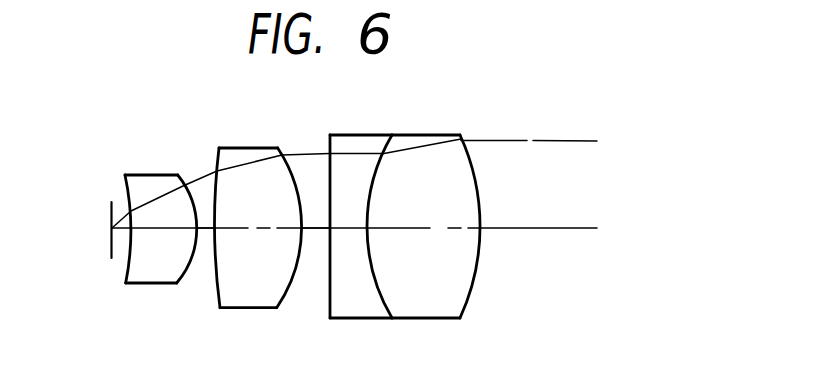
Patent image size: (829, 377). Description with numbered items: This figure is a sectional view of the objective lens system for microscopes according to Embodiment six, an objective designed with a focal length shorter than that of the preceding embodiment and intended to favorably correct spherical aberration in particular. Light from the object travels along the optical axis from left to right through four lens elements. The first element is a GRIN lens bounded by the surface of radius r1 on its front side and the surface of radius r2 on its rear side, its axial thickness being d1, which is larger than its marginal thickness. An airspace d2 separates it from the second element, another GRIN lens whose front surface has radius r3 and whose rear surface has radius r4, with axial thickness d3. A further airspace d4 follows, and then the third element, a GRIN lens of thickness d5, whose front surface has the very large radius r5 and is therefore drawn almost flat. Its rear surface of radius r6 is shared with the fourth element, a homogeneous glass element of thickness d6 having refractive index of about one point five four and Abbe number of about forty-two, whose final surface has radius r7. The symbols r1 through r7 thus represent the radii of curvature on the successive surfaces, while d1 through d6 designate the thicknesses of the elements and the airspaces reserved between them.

The radius of curvature of the first surface r1 is at (126, 185).
The radius of curvature of the second surface r2 is at (190, 183).
The radius of curvature of the third surface r3 is at (218, 162).
The radius of curvature of the fourth surface r4 is at (287, 160).
The radius of curvature of the fifth surface r5 is at (330, 148).
The radius of curvature of the sixth surface r6 is at (381, 158).
The radius of curvature of the seventh surface r7 is at (468, 153).
The thickness of the first lens element d1 is at (158, 228).
The airspace between the first and second lens elements d2 is at (205, 229).
The thickness of the second lens element d3 is at (247, 228).
The airspace between the second and third lens elements d4 is at (314, 228).
The thickness of the third lens element d5 is at (345, 228).
The thickness of the fourth lens element d6 is at (410, 228).